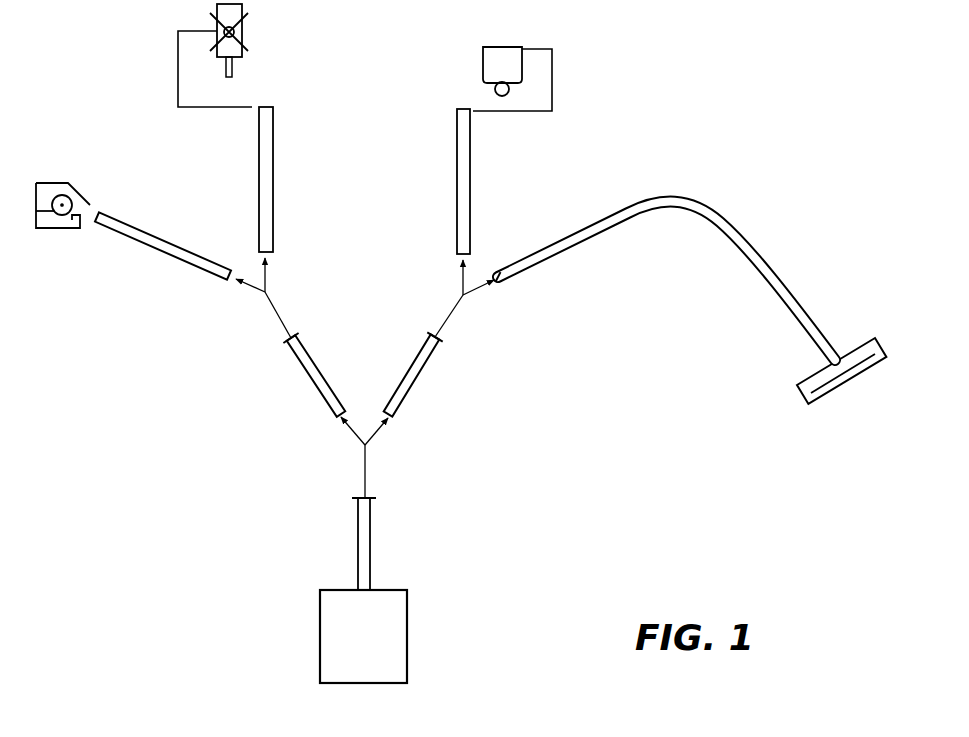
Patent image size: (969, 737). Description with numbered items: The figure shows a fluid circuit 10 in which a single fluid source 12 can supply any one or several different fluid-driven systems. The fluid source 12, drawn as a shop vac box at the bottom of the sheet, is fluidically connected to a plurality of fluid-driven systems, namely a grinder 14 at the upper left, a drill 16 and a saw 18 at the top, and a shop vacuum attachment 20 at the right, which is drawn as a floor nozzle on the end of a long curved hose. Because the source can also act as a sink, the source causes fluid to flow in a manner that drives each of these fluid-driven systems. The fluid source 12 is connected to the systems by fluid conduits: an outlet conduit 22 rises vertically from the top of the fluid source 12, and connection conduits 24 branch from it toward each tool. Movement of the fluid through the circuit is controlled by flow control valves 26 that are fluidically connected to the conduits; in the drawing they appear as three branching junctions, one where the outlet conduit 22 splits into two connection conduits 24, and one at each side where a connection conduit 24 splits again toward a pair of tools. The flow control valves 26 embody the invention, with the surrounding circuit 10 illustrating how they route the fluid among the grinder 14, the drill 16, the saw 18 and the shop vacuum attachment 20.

The fluid circuit 10 is at (237, 472).
The fluid source 12 is at (396, 642).
The grinder 14 is at (52, 228).
The drill 16 is at (238, 32).
The saw 18 is at (533, 72).
The shop vacuum attachment 20 is at (862, 348).
The outlet conduit 22 is at (366, 545).
The connection conduits 24 is at (148, 237).
The flow control valves 26 is at (280, 283).